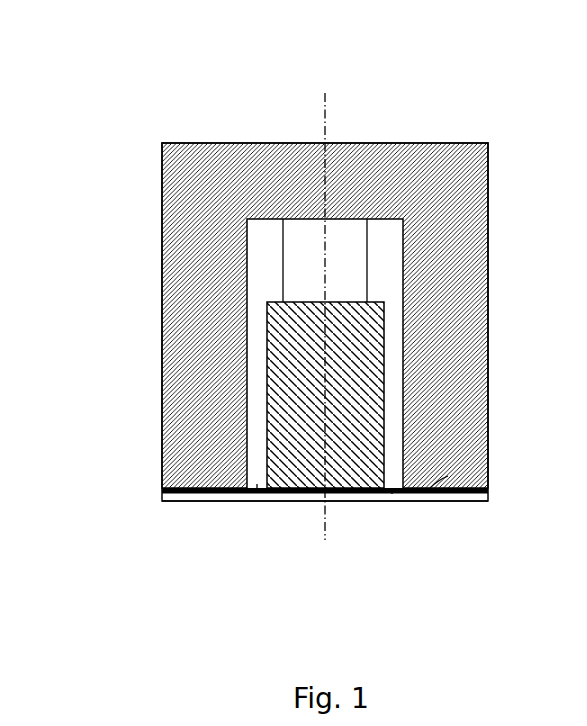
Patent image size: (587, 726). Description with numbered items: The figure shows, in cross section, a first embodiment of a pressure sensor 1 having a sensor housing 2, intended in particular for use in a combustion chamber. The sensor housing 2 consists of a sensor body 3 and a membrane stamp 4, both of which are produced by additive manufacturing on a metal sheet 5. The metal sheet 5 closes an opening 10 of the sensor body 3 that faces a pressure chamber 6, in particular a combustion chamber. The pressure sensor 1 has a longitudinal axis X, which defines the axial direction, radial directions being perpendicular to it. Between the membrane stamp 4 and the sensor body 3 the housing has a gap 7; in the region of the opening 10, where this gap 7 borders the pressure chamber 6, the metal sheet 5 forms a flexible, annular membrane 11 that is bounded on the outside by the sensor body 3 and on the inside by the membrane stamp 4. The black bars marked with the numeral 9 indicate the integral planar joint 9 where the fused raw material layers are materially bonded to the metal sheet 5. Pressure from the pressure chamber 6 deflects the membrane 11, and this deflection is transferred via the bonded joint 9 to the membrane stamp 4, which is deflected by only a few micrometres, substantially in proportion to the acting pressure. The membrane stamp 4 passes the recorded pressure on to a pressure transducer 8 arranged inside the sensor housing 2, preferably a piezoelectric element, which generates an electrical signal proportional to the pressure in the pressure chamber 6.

The pressure sensor 1 is at (88, 62).
The sensor housing 2 is at (98, 298).
The sensor body 3 is at (162, 224).
The membrane stamp 4 is at (278, 301).
The metal sheet 5 is at (215, 502).
The pressure chamber 6 is at (332, 596).
The gap 7 is at (257, 484).
The pressure transducer 8 is at (312, 270).
The bonded joint 9 is at (178, 501).
The opening 10 is at (430, 487).
The membrane 11 is at (393, 494).
The longitudinal axis X is at (326, 97).